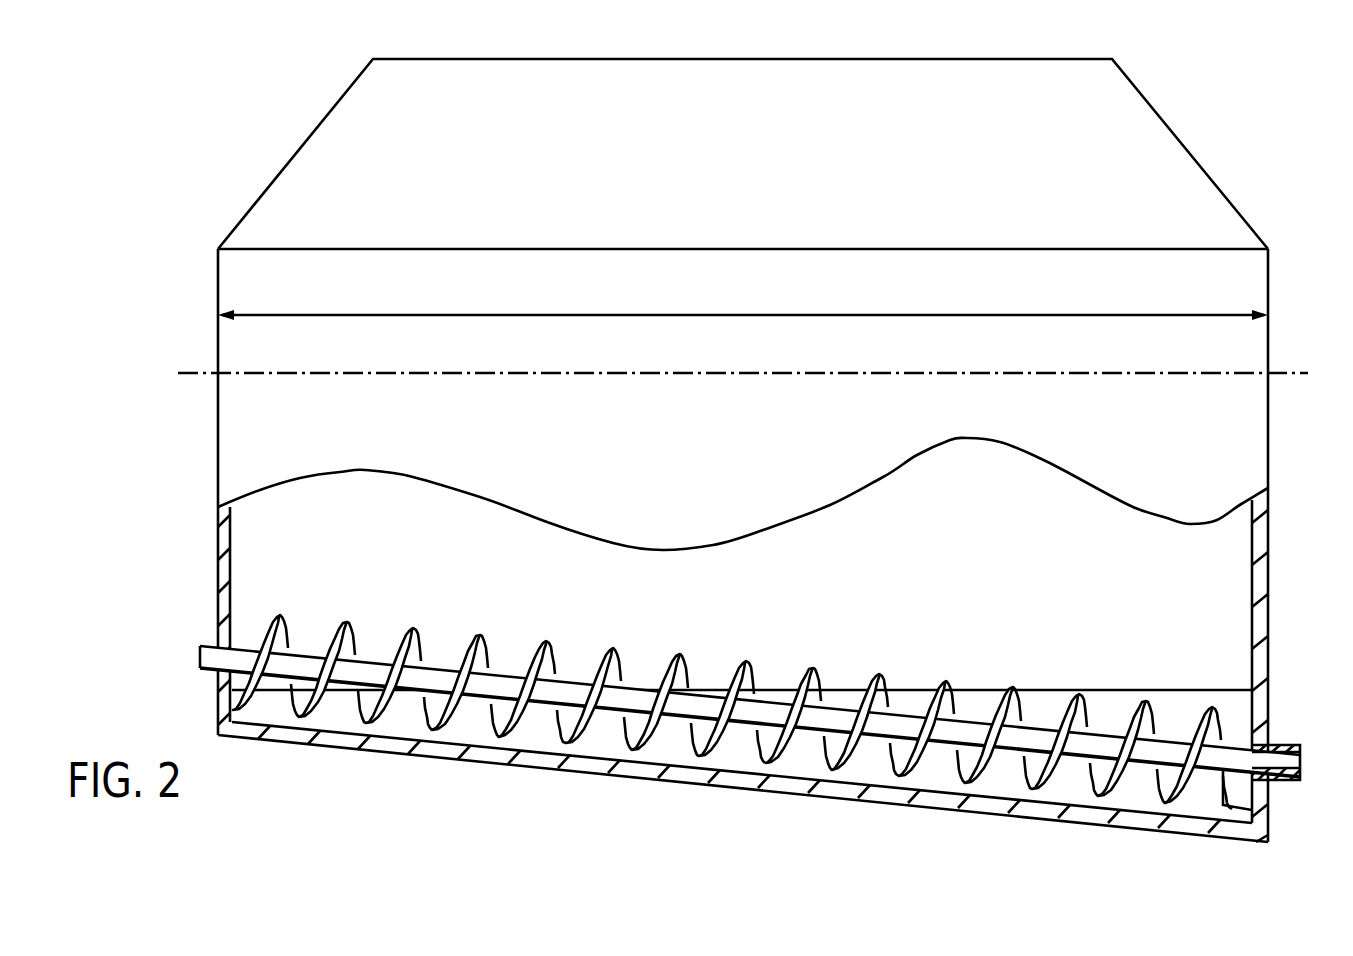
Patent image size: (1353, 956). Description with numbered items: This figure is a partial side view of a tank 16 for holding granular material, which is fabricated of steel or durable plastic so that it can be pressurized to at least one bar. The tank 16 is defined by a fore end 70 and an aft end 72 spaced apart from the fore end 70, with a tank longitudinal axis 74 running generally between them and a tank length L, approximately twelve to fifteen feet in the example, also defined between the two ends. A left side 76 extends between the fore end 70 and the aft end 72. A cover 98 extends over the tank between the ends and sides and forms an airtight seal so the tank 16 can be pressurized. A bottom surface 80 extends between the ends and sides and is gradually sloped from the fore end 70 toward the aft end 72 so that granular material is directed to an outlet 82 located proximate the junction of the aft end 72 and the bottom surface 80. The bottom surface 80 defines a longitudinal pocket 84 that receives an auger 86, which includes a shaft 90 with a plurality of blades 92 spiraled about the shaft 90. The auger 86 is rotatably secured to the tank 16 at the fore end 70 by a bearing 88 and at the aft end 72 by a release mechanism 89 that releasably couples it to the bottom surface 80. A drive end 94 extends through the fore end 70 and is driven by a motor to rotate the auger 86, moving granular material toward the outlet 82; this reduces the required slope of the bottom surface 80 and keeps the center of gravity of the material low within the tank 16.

The tank 16 is at (1053, 50).
The cover 98 is at (440, 128).
The fore end 70 is at (216, 295).
The aft end 72 is at (1270, 348).
The tank longitudinal axis 74 is at (748, 372).
The left side 76 is at (285, 430).
The bearing 88 is at (219, 632).
The longitudinal pocket 84 is at (932, 808).
The bottom surface 80 is at (300, 722).
The blades 92 is at (1020, 690).
The release mechanism 89 is at (1218, 785).
The auger 86 is at (613, 641).
The shaft 90 is at (845, 700).
The drive end 94 is at (203, 670).
The outlet 82 is at (1273, 748).
The tank length L is at (385, 320).